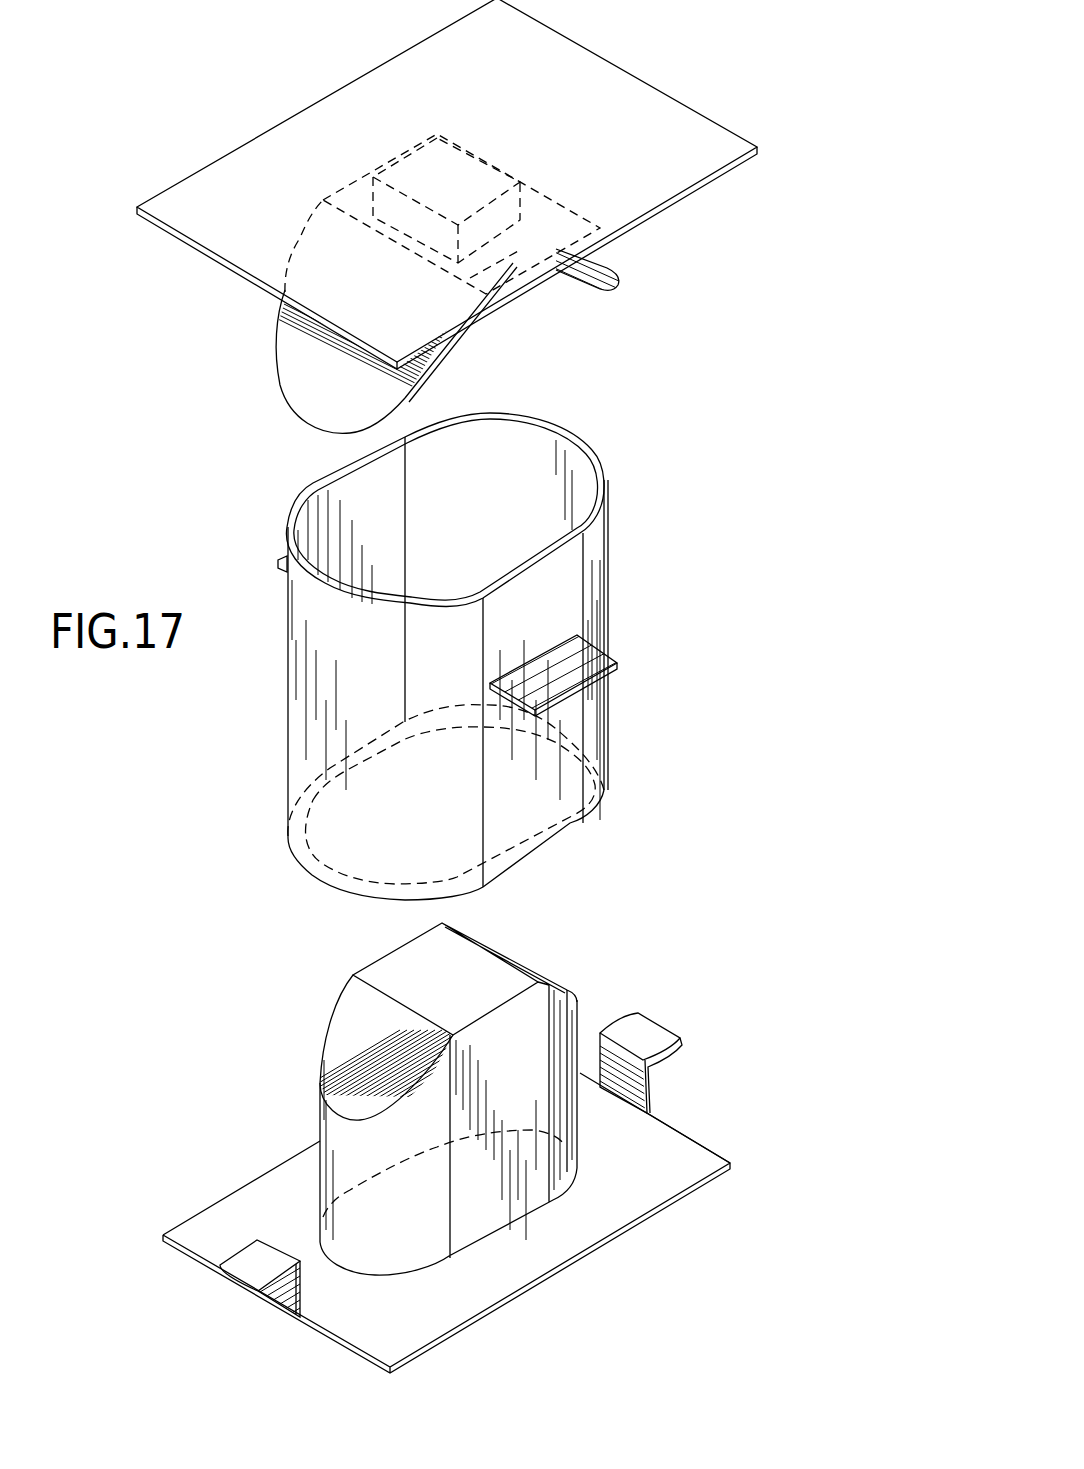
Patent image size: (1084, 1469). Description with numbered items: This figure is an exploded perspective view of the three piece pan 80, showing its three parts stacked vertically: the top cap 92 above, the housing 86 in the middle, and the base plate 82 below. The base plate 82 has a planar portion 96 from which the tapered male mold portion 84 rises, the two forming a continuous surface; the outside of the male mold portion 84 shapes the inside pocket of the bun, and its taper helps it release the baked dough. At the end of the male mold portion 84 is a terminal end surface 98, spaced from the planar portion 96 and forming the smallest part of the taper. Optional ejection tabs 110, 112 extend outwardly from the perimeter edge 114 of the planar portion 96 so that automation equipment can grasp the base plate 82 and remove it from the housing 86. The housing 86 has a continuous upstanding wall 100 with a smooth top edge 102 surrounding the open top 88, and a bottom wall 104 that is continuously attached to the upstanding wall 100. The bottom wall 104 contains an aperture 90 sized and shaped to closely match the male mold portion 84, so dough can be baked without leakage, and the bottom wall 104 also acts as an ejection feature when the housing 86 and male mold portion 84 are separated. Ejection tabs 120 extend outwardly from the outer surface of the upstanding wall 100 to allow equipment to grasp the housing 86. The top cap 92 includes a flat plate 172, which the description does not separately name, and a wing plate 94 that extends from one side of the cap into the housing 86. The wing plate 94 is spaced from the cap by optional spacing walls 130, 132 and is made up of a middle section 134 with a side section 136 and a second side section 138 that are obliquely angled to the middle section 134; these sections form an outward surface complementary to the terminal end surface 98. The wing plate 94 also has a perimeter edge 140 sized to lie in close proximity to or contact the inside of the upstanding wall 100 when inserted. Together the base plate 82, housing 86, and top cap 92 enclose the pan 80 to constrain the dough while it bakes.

The pan 80 is at (237, 110).
The cover plate 172 is at (590, 68).
The top cap 92 is at (775, 105).
The spacing wall 130 is at (378, 195).
The spacing wall 132 is at (533, 190).
The middle section 134 is at (500, 264).
The wing plate 94 is at (288, 330).
The side section 136 is at (431, 352).
The second side section 138 is at (612, 288).
The perimeter edge 140 is at (305, 424).
The housing 86 is at (632, 592).
The open top 88 is at (350, 488).
The top edge 102 is at (574, 430).
The continuous upstanding wall 100 is at (612, 542).
The bottom wall 104 is at (543, 845).
The aperture 90 is at (368, 850).
The ejection tabs 120 is at (280, 560).
The base plate 82 is at (732, 1056).
The planar portion 96 is at (662, 1182).
The perimeter edge 114 is at (700, 1142).
The ejection tab 110 is at (245, 1258).
The ejection tab 112 is at (645, 1027).
The male mold portion 84 is at (305, 1130).
The terminal end surface 98 is at (462, 992).